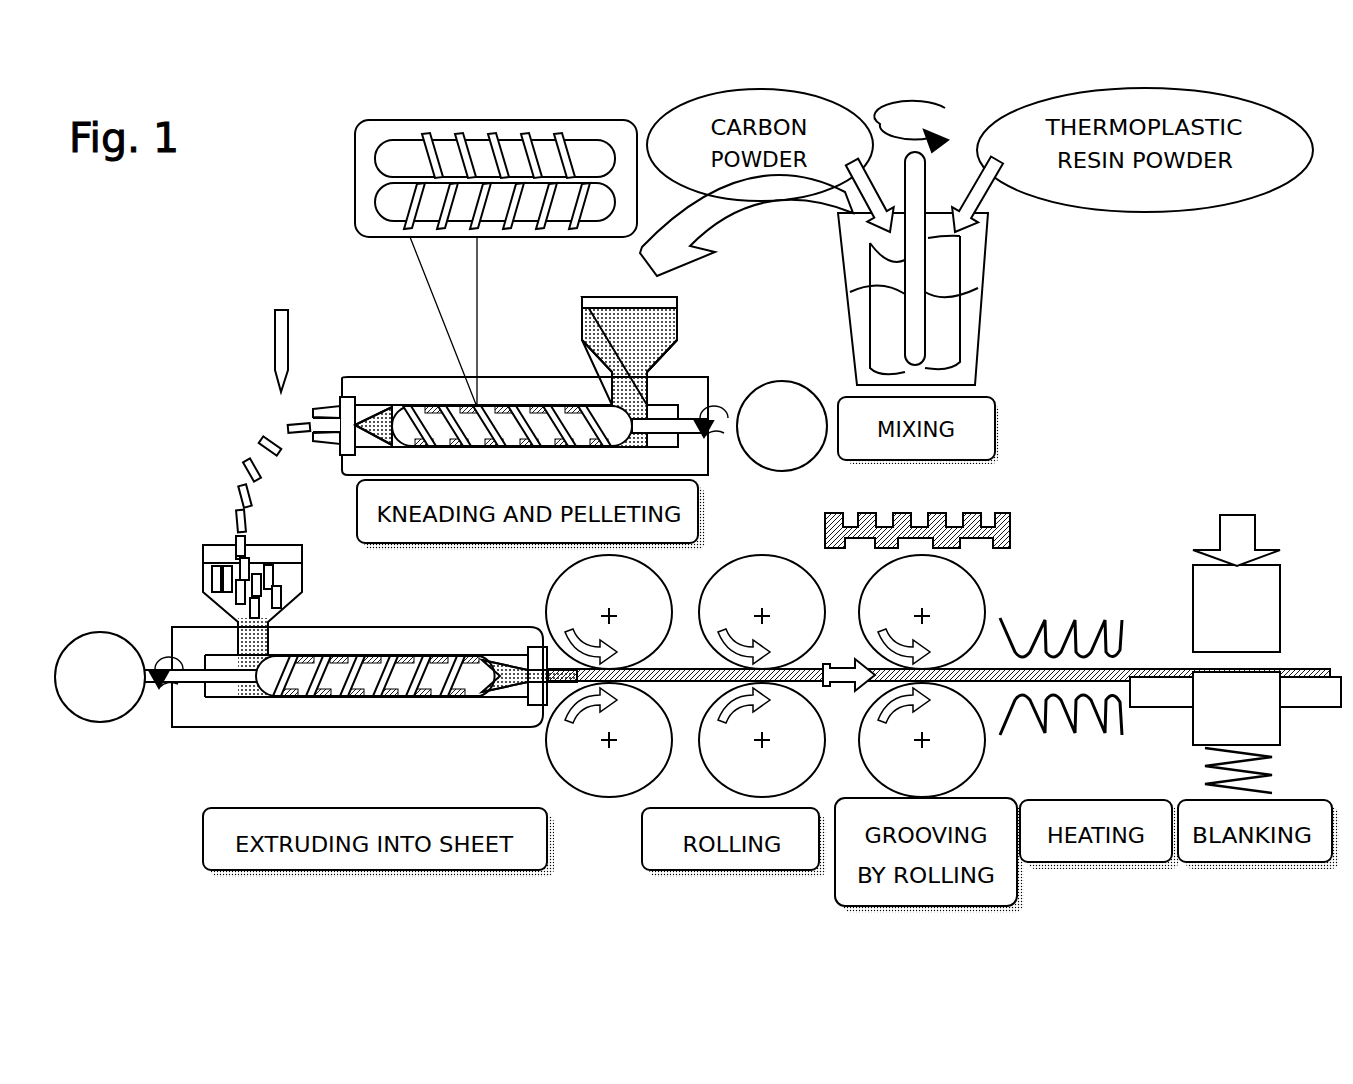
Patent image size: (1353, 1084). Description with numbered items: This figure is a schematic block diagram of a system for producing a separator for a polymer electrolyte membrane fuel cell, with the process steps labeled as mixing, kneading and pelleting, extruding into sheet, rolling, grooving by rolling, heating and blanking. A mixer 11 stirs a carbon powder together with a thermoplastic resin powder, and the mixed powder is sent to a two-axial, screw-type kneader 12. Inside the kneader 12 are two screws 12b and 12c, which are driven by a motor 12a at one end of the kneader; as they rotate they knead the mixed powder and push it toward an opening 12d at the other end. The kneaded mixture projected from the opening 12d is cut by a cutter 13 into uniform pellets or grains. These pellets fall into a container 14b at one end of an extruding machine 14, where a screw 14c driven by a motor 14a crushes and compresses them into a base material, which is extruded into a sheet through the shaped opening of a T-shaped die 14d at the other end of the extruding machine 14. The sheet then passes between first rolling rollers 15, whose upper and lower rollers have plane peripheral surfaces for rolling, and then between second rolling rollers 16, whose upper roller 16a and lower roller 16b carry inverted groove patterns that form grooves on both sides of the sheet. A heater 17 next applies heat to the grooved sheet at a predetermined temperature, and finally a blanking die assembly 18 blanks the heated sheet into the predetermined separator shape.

The mixer 11 is at (990, 316).
The two-axial, screw-type kneader 12 is at (511, 297).
The motor 12a is at (790, 381).
The screw 12b is at (378, 210).
The screw 12c is at (378, 158).
The opening 12d is at (338, 427).
The cutter 13 is at (268, 372).
The extruding machine 14 is at (338, 645).
The motor 14a is at (98, 633).
The container 14b is at (206, 580).
The screw 14c is at (388, 700).
The T-shaped die 14d is at (538, 712).
The first rolling rollers 15 is at (706, 606).
The second rolling rollers 16 is at (928, 655).
The upper roller 16a is at (976, 612).
The lower roller 16b is at (976, 745).
The heater 17 is at (1072, 610).
The blanking die assembly 18 is at (1284, 606).